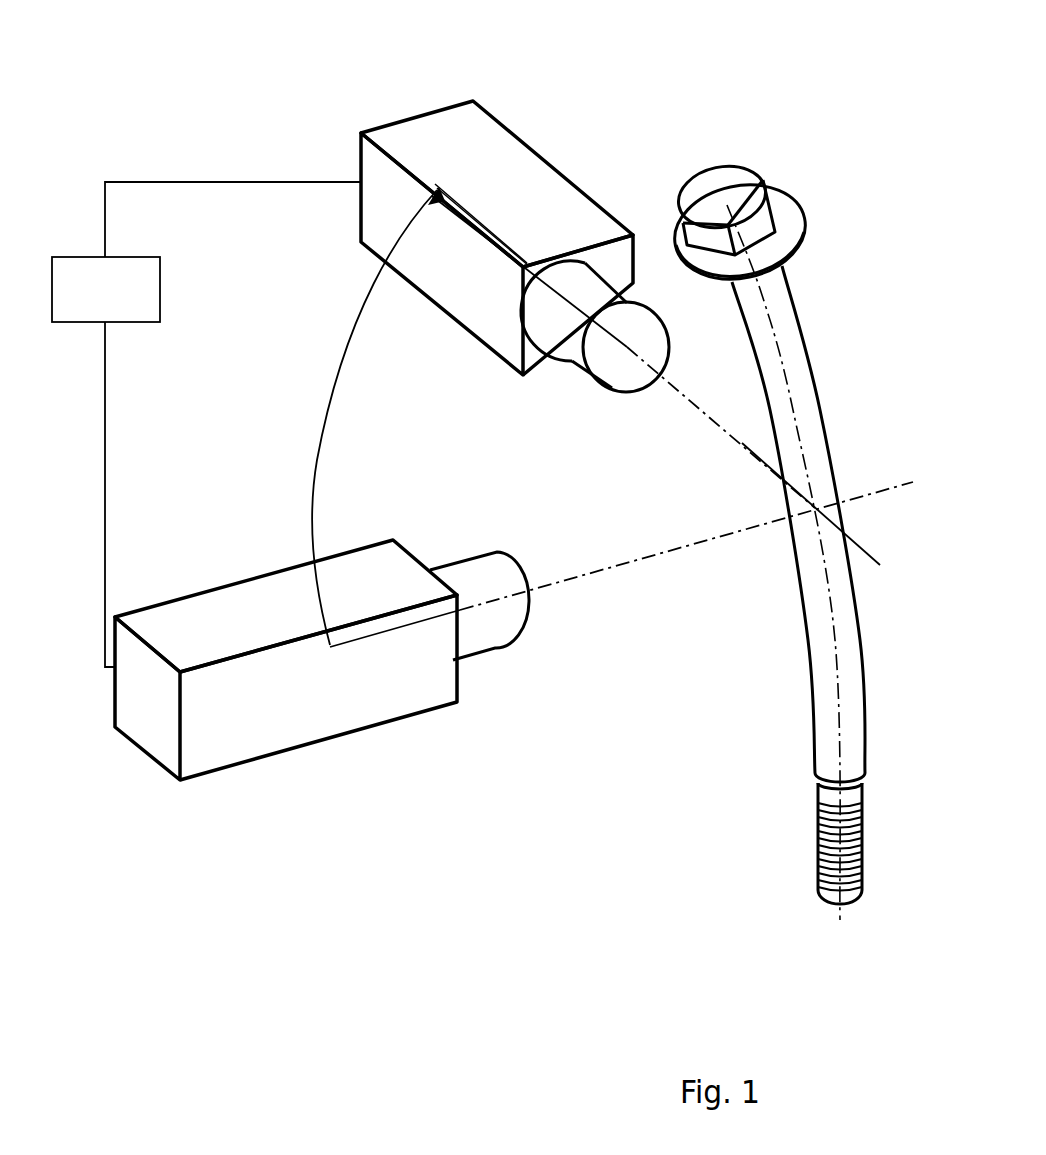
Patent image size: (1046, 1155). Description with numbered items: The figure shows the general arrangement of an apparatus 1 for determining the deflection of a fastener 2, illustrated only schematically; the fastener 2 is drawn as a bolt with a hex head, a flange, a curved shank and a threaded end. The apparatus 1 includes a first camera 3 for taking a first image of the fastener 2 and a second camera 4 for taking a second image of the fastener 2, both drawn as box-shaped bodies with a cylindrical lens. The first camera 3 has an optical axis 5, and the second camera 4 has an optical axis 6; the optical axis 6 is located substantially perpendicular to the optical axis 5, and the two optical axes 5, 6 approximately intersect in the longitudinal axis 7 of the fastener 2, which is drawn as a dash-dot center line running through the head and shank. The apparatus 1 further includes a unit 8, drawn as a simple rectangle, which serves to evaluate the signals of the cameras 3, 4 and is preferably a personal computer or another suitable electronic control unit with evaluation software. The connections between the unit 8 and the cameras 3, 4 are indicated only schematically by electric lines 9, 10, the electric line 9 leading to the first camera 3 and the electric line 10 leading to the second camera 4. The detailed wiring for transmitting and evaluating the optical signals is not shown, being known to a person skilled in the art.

The apparatus 1 is at (586, 105).
The fastener 2 is at (803, 332).
The first camera 3 is at (412, 115).
The second camera 4 is at (282, 752).
The optical axis 5 is at (627, 416).
The optical axis 6 is at (677, 552).
The longitudinal axis 7 is at (886, 623).
The unit 8 is at (72, 257).
The electric line 9 is at (227, 180).
The electric line 10 is at (82, 494).